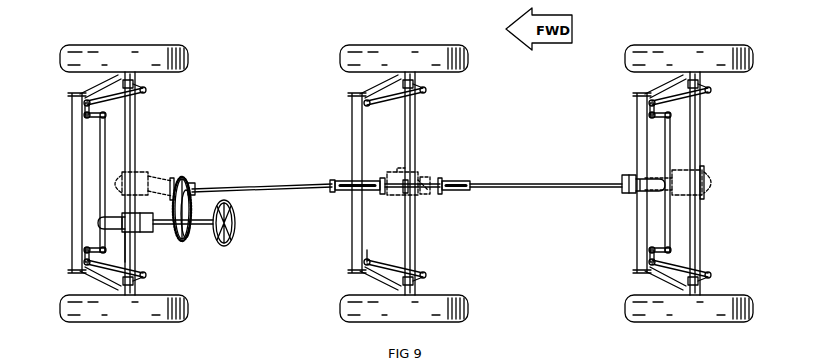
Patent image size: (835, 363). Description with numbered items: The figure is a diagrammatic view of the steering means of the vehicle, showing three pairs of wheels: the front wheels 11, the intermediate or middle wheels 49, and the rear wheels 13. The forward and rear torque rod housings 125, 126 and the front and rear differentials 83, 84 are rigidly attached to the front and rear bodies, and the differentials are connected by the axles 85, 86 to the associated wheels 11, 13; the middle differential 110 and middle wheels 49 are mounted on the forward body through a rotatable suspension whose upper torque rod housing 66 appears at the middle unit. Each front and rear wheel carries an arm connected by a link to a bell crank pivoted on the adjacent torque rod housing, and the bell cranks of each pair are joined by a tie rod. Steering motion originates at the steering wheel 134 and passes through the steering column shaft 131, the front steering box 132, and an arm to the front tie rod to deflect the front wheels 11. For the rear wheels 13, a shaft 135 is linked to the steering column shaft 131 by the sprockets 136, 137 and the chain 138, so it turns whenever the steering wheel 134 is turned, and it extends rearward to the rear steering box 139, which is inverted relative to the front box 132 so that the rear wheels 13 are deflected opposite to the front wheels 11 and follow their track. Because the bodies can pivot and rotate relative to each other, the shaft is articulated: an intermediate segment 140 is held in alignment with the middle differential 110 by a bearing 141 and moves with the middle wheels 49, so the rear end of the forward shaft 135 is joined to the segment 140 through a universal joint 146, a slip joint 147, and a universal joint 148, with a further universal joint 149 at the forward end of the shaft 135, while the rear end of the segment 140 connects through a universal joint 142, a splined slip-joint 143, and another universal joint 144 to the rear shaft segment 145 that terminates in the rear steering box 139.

The front wheels 11 is at (88, 45).
The rear wheels 13 is at (692, 43).
The intermediate wheels 49 is at (404, 43).
The upper torque rod housing 66 is at (386, 207).
The front differential 83 is at (138, 172).
The rear differential 84 is at (715, 182).
The front axles 85 is at (155, 183).
The rear axles 86 is at (725, 183).
The middle differential 110 is at (394, 196).
The forward torque rod housing 125 is at (0, 128).
The rear torque rod housing 126 is at (620, 183).
The steering column shaft 131 is at (204, 228).
The front steering box 132 is at (153, 256).
The steering wheel 134 is at (236, 231).
The shaft 135 is at (252, 186).
The sprocket 136 is at (185, 238).
The sprocket 137 is at (184, 180).
The chain 138 is at (178, 209).
The rear steering box 139 is at (631, 194).
The intermediate segment 140 is at (397, 172).
The bearing 141 is at (408, 180).
The universal joint 142 is at (438, 194).
The splined slip-joint 143 is at (442, 190).
The universal joint 144 is at (470, 192).
The rear shaft segment 145 is at (545, 184).
The universal joint 146 is at (330, 190).
The slip joint 147 is at (350, 192).
The universal joint 148 is at (382, 182).
The universal joint 149 is at (194, 188).